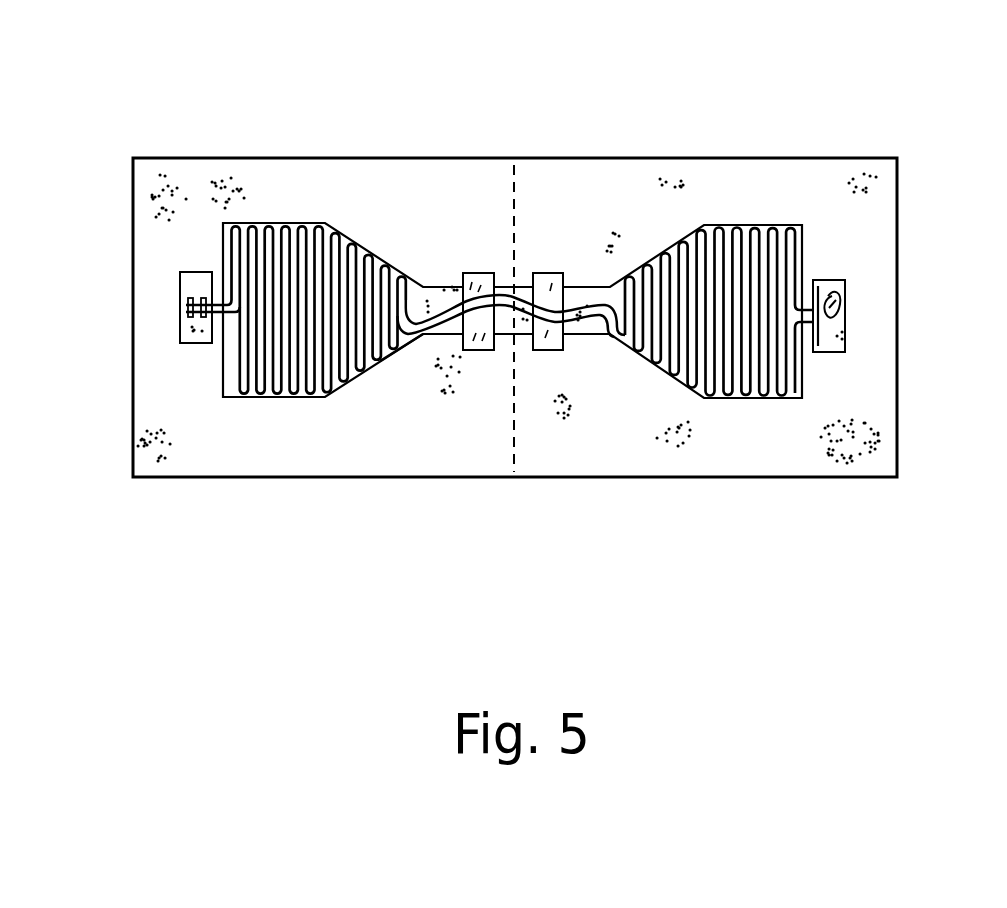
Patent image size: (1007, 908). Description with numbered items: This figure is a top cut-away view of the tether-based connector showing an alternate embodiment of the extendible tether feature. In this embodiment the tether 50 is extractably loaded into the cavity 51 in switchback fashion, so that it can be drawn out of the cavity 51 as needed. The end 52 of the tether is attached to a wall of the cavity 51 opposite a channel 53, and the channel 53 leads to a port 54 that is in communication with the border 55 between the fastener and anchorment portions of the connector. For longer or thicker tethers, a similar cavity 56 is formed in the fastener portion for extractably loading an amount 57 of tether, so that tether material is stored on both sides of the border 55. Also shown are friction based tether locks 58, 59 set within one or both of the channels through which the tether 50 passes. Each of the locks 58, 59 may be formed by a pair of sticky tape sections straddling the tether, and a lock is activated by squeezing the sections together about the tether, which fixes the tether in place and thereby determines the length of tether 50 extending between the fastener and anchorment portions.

The tether 50 is at (440, 303).
The cavity 51 is at (255, 232).
The end of the tether 52 is at (190, 300).
The channel 53 is at (417, 342).
The port 54 is at (517, 285).
The border 55 is at (515, 452).
The cavity 56 is at (783, 230).
The amount of tether 57 is at (780, 388).
The friction based tether lock 58 is at (490, 349).
The friction based tether lock 59 is at (562, 347).